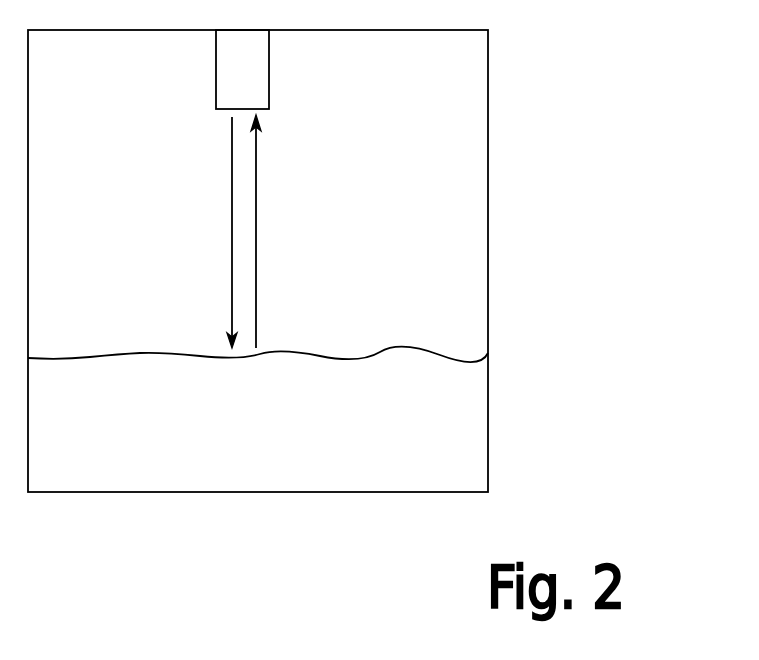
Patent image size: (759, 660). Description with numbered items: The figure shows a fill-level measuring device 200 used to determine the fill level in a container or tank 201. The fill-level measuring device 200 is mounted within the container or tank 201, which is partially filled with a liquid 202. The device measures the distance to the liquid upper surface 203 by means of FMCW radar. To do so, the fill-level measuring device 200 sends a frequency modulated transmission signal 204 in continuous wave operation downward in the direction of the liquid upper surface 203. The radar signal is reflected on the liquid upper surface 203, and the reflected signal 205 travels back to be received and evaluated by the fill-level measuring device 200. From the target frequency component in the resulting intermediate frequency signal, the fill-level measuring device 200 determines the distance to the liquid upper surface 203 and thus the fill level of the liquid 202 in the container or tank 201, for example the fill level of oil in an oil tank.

The fill-level measuring device 200 is at (269, 62).
The container or tank 201 is at (488, 122).
The liquid 202 is at (385, 440).
The liquid upper surface 203 is at (358, 352).
The frequency modulated transmission signal 204 is at (232, 228).
The reflected signal 205 is at (256, 218).